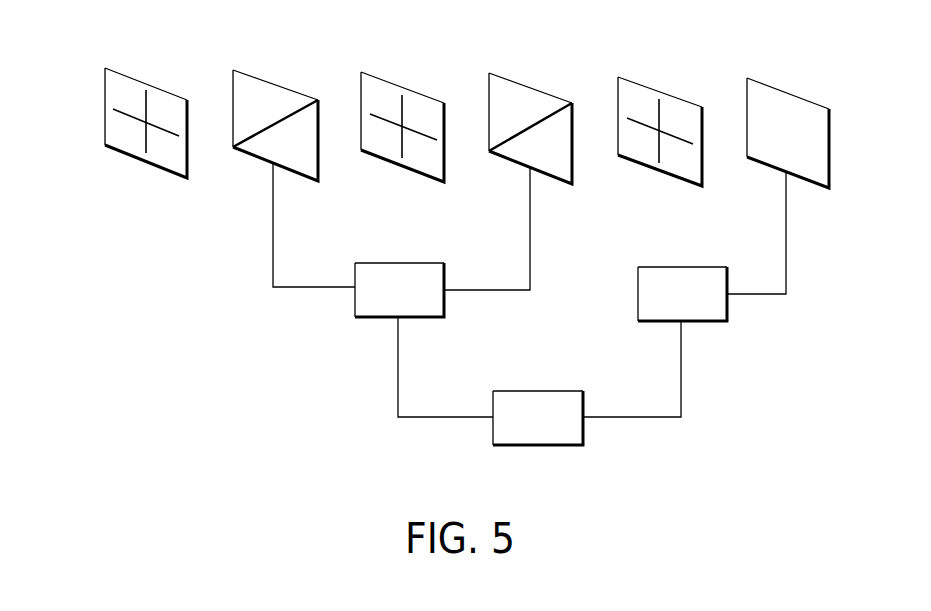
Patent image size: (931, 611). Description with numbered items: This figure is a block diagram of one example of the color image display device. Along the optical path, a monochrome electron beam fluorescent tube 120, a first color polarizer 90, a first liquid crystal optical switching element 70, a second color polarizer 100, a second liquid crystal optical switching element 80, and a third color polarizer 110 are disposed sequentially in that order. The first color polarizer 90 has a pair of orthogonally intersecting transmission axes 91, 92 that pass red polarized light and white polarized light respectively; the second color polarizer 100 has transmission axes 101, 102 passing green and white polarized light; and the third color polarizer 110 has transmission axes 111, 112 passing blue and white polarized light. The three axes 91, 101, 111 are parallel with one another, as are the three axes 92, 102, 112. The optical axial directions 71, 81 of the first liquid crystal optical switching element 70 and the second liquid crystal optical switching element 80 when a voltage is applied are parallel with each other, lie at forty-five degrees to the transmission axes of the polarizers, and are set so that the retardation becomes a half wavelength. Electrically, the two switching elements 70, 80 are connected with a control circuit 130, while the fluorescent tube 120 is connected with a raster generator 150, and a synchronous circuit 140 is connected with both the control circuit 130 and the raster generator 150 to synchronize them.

The first liquid crystal optical switching element 70 is at (539, 109).
The optical axial direction 71 is at (560, 110).
The second liquid crystal optical switching element 80 is at (276, 101).
The optical axial direction 81 is at (298, 107).
The first color polarizer 90 is at (661, 123).
The transmission axis 91 is at (665, 99).
The transmission axis 92 is at (685, 143).
The second color polarizer 100 is at (415, 126).
The transmission axis 101 is at (412, 92).
The transmission axis 102 is at (430, 137).
The third color polarizer 110 is at (160, 124).
The transmission axis 111 is at (157, 88).
The transmission axis 112 is at (175, 133).
The monochrome electron beam fluorescent tube 120 is at (770, 83).
The control circuit 130 is at (375, 318).
The synchronous circuit 140 is at (555, 390).
The raster generator 150 is at (710, 322).